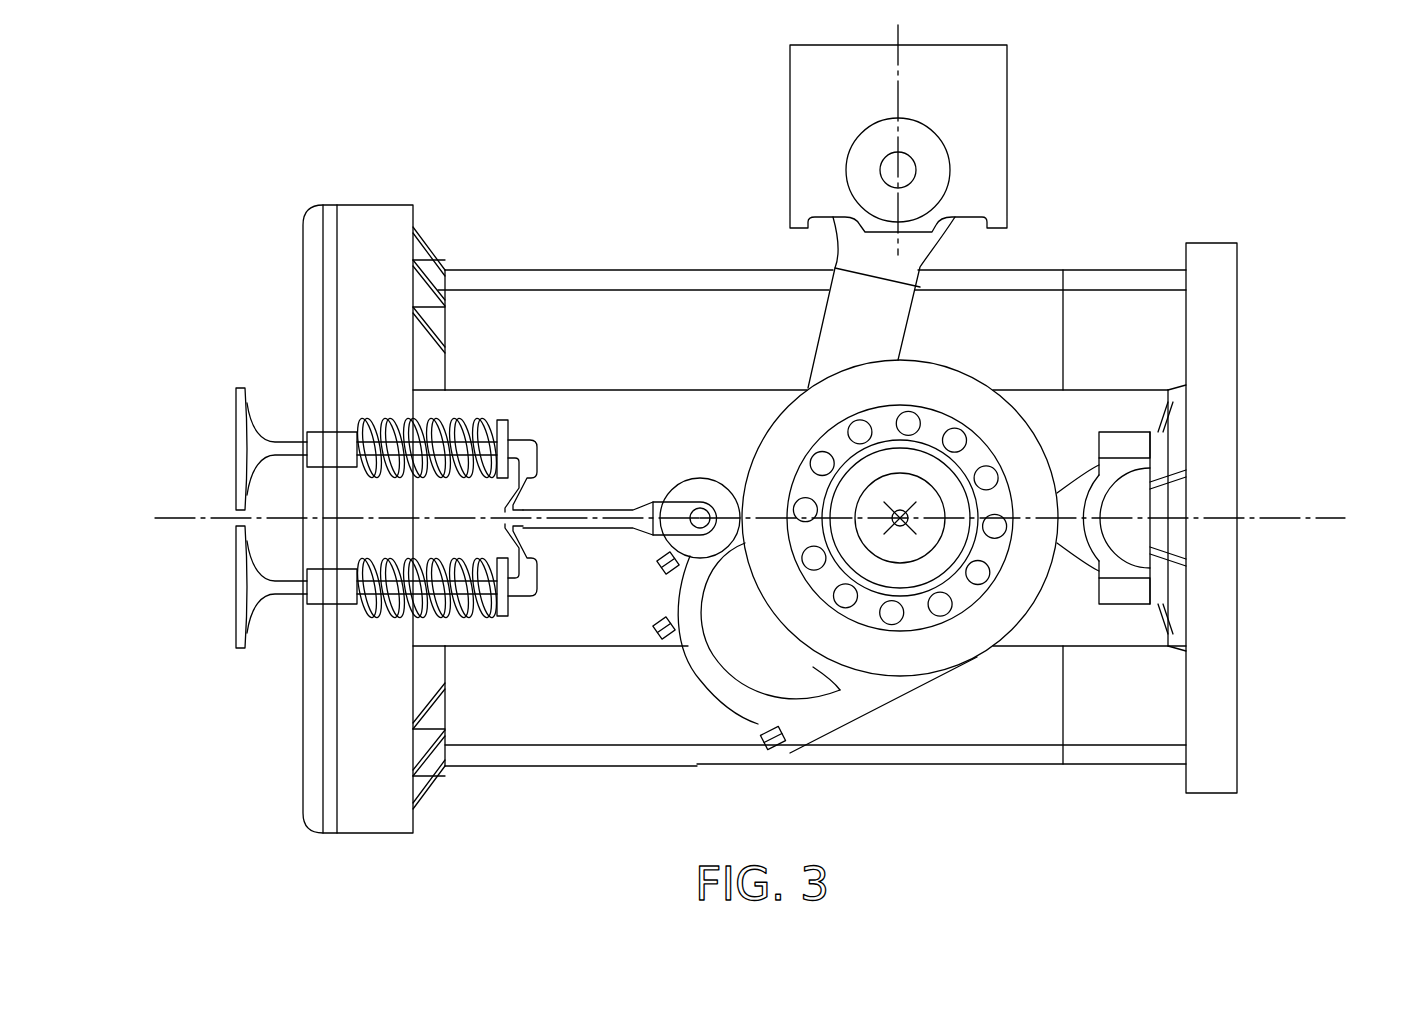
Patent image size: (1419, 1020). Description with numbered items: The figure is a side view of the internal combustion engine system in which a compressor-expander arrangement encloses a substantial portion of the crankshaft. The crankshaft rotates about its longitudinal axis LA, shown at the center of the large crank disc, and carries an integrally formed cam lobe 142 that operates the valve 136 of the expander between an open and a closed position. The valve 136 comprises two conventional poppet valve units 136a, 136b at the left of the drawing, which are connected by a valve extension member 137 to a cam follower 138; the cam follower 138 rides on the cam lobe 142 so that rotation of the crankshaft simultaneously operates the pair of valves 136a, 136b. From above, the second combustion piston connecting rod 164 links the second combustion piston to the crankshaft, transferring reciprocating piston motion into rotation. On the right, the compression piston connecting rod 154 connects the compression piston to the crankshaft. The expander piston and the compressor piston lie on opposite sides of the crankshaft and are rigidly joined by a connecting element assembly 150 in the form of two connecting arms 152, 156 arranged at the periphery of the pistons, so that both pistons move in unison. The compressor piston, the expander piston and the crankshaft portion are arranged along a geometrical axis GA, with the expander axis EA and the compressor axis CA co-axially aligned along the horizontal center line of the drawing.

The connecting element assembly 150 is at (775, 493).
The connecting arm 152 is at (522, 350).
The connecting arm 156 is at (587, 693).
The valve extension member 137 is at (607, 510).
The cam follower 138 is at (697, 490).
The second combustion piston connecting rod 164 is at (852, 332).
The valve 136 is at (323, 516).
The poppet valve unit 136a is at (287, 445).
The poppet valve unit 136b is at (287, 595).
The cam lobe 142 is at (843, 675).
The compression piston connecting rod 154 is at (1077, 565).
The geometrical axis GA is at (746, 481).
The expander axis EA is at (190, 515).
The compressor axis CA is at (1290, 515).
The longitudinal axis LA is at (897, 527).